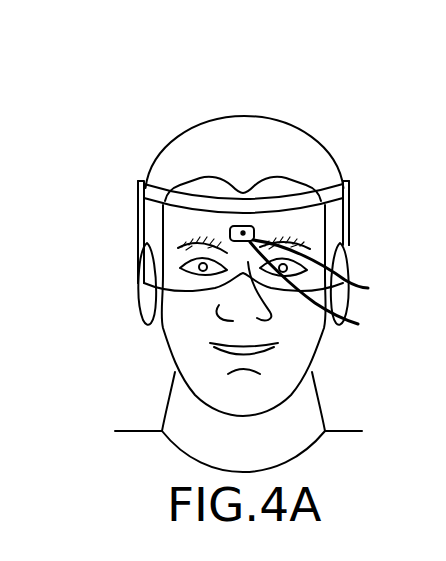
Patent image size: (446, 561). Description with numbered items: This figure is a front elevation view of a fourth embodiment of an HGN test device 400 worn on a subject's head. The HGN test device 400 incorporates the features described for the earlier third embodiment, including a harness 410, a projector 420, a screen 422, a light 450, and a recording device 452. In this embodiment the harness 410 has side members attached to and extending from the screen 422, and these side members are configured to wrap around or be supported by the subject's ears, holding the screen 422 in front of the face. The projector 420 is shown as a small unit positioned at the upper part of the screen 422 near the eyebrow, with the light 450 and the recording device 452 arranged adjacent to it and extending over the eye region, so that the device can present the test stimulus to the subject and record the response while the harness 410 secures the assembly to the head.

The HGN test device 400 is at (80, 116).
The harness 410 is at (150, 194).
The projector 420 is at (254, 233).
The screen 422 is at (147, 288).
The light 450 is at (332, 270).
The recording device 452 is at (322, 291).